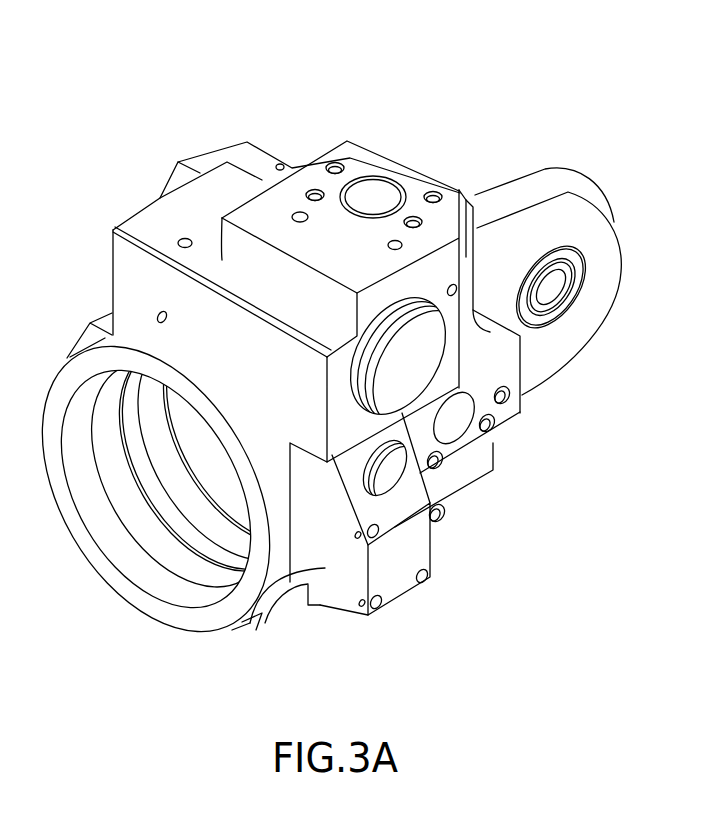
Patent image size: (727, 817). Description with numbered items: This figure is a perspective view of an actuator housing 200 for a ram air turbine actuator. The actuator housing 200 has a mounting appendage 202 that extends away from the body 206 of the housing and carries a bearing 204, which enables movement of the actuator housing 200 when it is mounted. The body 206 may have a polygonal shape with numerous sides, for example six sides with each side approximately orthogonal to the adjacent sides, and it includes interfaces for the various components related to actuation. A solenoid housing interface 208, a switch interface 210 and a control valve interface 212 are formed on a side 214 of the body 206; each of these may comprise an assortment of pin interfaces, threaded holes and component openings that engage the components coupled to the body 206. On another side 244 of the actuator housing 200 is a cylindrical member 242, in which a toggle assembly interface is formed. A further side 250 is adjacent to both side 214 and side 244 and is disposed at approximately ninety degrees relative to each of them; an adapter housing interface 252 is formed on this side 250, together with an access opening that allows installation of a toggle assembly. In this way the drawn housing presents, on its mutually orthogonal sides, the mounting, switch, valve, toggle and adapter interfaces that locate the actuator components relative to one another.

The actuator housing 200 is at (133, 87).
The mounting appendage 202 is at (598, 220).
The bearing 204 is at (558, 287).
The body 206 is at (307, 524).
The solenoid housing interface 208 is at (478, 438).
The switch interface 210 is at (413, 503).
The control valve interface 212 is at (452, 255).
The side 214 is at (418, 550).
The cylindrical member 242 is at (120, 555).
The side 244 is at (125, 278).
The side 250 is at (272, 214).
The adapter housing interface 252 is at (416, 183).